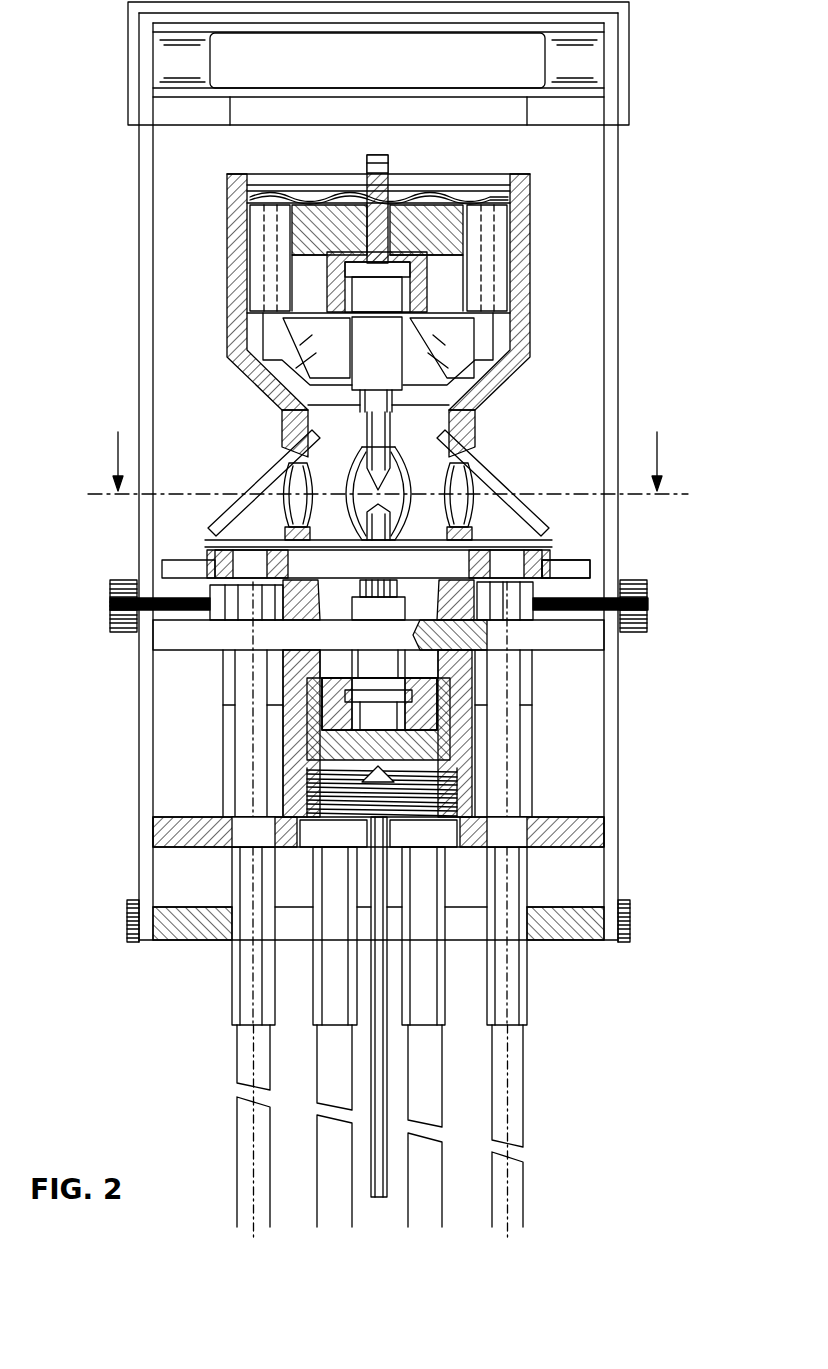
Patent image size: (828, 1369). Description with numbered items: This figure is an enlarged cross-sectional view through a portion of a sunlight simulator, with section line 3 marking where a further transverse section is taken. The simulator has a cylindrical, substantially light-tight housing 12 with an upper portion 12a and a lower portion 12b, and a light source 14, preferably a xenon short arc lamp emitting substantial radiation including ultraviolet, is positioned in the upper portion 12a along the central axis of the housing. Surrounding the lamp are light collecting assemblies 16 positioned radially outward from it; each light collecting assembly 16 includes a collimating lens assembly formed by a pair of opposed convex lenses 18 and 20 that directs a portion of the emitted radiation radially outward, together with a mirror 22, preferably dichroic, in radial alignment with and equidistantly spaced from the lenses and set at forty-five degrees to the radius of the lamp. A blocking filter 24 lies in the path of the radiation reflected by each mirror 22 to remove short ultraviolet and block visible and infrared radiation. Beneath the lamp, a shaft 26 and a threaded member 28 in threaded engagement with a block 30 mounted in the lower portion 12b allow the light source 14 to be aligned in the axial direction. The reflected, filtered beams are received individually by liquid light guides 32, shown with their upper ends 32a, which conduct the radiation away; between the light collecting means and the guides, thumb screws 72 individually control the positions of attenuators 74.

The housing 12 is at (619, 149).
The upper portion 12a is at (619, 243).
The lower portion 12b is at (619, 669).
The section line 3- 3 is at (388, 451).
The light source 14 is at (362, 463).
The light collecting assembly 16 is at (268, 460).
The convex lens 18 is at (315, 512).
The convex lens 20 is at (288, 472).
The mirror 22 is at (250, 486).
The blocking filter 24 is at (205, 561).
The shaft 26 is at (388, 1109).
The threaded member 28 is at (465, 793).
The block 30 is at (465, 738).
The liquid light guide 32 is at (237, 1203).
The tube sleeve 32a is at (238, 1073).
The thumb screw 72 is at (110, 603).
The attenuator 74 is at (558, 578).